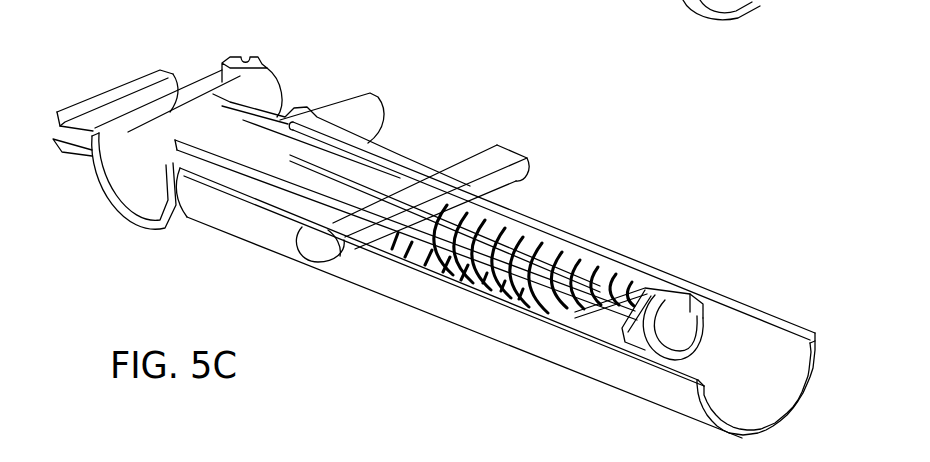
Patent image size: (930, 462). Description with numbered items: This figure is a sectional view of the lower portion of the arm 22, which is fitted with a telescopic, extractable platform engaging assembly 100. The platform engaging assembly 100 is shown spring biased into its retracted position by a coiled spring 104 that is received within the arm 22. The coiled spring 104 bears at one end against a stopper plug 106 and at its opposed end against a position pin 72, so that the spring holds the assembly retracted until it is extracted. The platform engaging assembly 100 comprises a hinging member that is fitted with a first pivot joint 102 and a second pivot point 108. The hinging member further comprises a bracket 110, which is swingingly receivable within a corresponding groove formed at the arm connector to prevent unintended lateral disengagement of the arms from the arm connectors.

The arm 22 is at (513, 331).
The platform engaging assembly 100 is at (318, 84).
The second pivot point 108 is at (112, 92).
The bracket 110 is at (240, 58).
The first pivot joint 102 is at (147, 220).
The position pin 72 is at (473, 173).
The coiled spring 104 is at (522, 230).
The stopper plug 106 is at (665, 320).